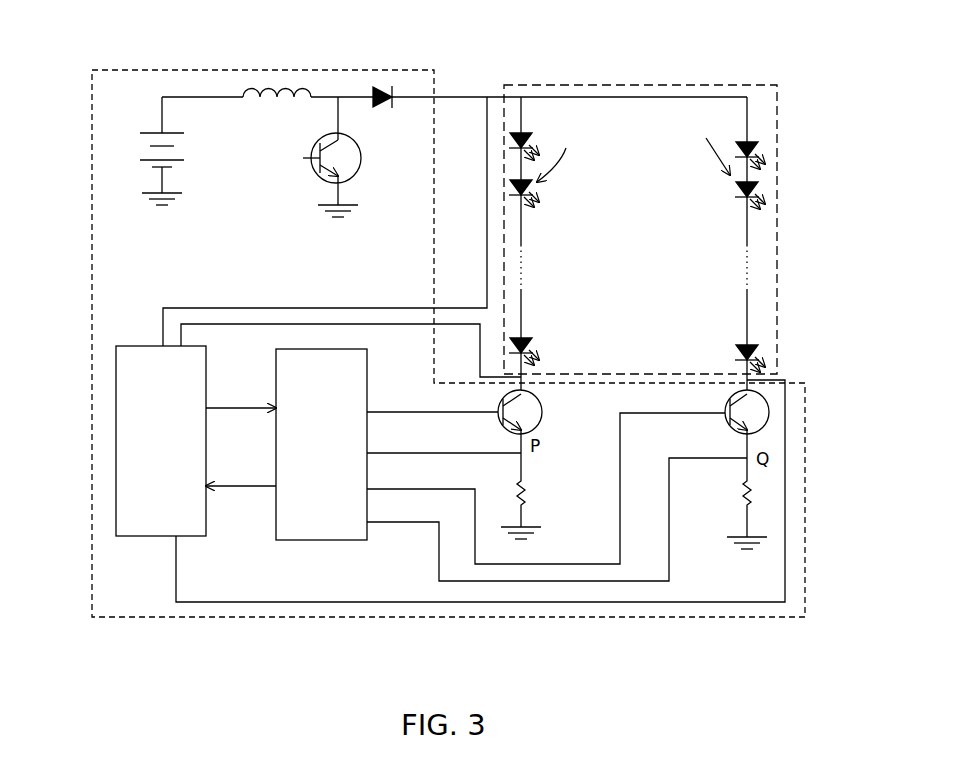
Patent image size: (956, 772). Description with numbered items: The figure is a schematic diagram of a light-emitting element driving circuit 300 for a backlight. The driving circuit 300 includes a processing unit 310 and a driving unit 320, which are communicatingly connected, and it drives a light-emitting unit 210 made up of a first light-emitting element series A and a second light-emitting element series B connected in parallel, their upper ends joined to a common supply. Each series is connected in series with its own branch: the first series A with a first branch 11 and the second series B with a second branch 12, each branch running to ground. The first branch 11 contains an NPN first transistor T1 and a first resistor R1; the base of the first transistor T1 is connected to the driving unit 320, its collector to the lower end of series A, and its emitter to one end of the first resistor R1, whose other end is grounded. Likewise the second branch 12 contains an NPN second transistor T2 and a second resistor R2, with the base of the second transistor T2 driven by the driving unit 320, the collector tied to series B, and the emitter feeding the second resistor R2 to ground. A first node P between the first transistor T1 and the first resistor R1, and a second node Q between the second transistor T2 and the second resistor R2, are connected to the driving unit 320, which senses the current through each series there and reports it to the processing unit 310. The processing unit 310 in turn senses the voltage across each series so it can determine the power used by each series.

The driving circuit 300 is at (147, 70).
The processing unit 310 is at (127, 425).
The driving unit 320 is at (323, 527).
The light-emitting unit 210 is at (780, 150).
The first branch 11 is at (531, 107).
The second branch 12 is at (746, 105).
The first transistor T1 is at (503, 434).
The second transistor T2 is at (732, 434).
The first resistor R1 is at (535, 493).
The second resistor R2 is at (761, 493).